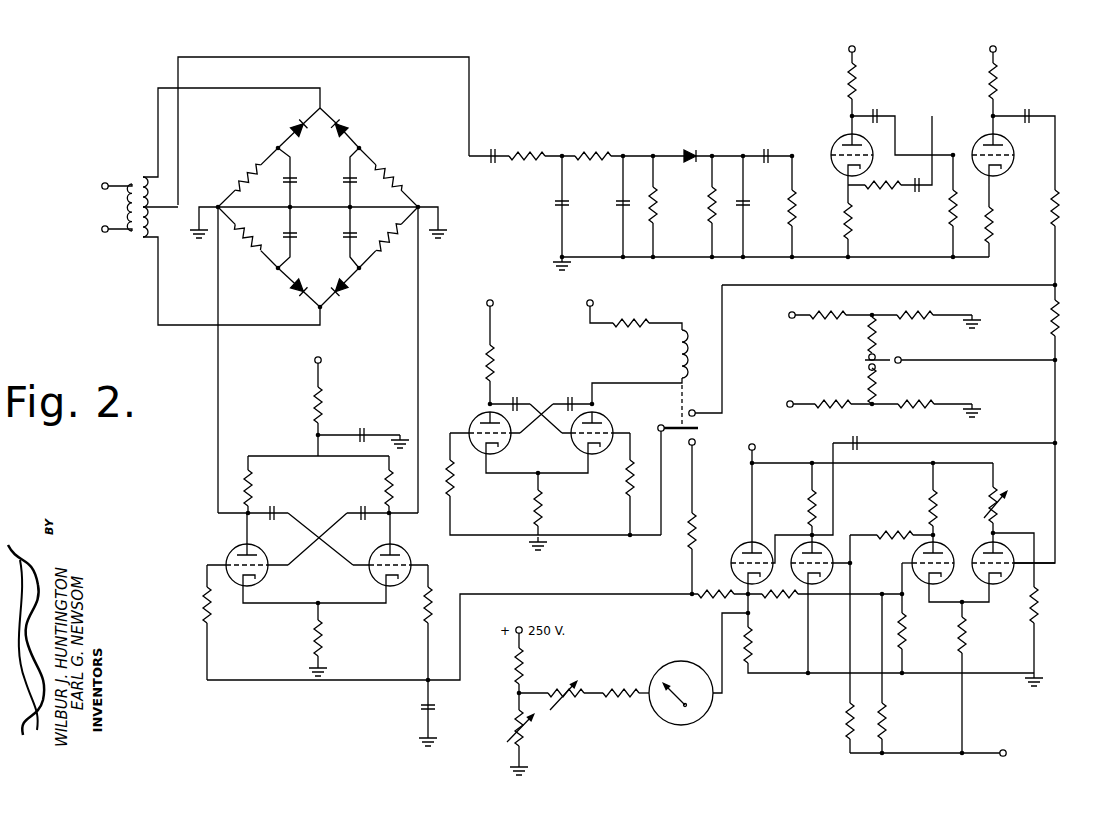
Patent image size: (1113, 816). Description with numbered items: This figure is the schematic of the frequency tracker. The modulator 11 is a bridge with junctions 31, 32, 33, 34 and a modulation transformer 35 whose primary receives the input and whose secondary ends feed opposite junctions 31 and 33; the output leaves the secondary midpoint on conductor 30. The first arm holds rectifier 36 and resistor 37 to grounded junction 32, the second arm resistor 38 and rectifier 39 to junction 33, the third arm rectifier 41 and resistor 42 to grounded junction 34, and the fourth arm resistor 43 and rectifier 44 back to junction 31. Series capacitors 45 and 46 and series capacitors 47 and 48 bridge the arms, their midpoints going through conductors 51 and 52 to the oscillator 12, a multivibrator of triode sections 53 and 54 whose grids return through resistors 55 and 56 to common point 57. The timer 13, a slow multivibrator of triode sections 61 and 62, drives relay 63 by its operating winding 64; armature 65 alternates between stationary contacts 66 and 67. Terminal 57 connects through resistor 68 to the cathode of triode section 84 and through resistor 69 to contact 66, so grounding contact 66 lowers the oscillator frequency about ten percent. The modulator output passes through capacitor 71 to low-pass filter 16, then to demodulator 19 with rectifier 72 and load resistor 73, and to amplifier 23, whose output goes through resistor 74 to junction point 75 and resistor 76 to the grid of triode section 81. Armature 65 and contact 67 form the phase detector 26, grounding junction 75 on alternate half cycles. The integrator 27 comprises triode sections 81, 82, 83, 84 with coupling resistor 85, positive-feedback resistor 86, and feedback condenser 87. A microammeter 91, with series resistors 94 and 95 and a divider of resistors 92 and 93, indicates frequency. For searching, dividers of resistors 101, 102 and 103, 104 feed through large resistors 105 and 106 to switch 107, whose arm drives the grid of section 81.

The modulator 11 is at (233, 146).
The oscillator 12 is at (268, 419).
The timer 13 is at (531, 382).
The low-pass filter 16 is at (583, 192).
The demodulator 19 is at (671, 204).
The amplifier 23 is at (881, 229).
The phase detector 26 is at (729, 384).
The integrator 27 is at (871, 501).
The conductor 30 is at (246, 56).
The junction 31 is at (324, 110).
The junction 32 is at (420, 206).
The junction 33 is at (318, 307).
The junction 34 is at (218, 205).
The modulation transformer 35 is at (135, 180).
The rectifier 36 is at (348, 127).
The resistor 37 is at (388, 170).
The resistor 38 is at (381, 255).
The rectifier 39 is at (340, 290).
The rectifier 41 is at (292, 288).
The resistor 42 is at (248, 241).
The resistor 43 is at (250, 171).
The rectifier 44 is at (297, 124).
The capacitor 45 is at (294, 176).
The capacitor 46 is at (294, 238).
The capacitor 47 is at (344, 183).
The capacitor 48 is at (344, 232).
The conductor 51 is at (218, 308).
The conductor 52 is at (418, 258).
The triode section 53 is at (236, 549).
The triode section 54 is at (404, 547).
The resistor 55 is at (207, 598).
The resistor 56 is at (426, 612).
The common point 57 is at (428, 678).
The triode section 61 is at (474, 418).
The triode section 62 is at (610, 418).
The relay 63 is at (624, 379).
The operating winding 64 is at (678, 352).
The armature 65 is at (665, 425).
The stationary contact 66 is at (695, 442).
The stationary contact 67 is at (694, 410).
The resistor 68 is at (712, 600).
The resistor 69 is at (690, 532).
The capacitor 71 is at (495, 163).
The rectifier 72 is at (691, 150).
The load resistor 73 is at (705, 215).
The resistor 74 is at (1062, 206).
The junction point 75 is at (1058, 284).
The resistor 76 is at (1060, 310).
The triode section 81 is at (1008, 538).
The triode section 82 is at (908, 550).
The triode section 83 is at (822, 594).
The triode section 84 is at (746, 543).
The resistor 85 is at (885, 530).
The resistor 86 is at (772, 600).
The feedback condenser 87 is at (860, 438).
The microammeter 91 is at (697, 718).
The resistor 92 is at (527, 660).
The resistor 93 is at (526, 742).
The resistor 94 is at (566, 700).
The resistor 95 is at (612, 698).
The resistor 101 is at (818, 312).
The resistor 102 is at (906, 312).
The resistor 103 is at (822, 400).
The resistor 104 is at (912, 400).
The resistor 105 is at (868, 340).
The resistor 106 is at (867, 384).
The single pole double throw switch 107 is at (894, 357).